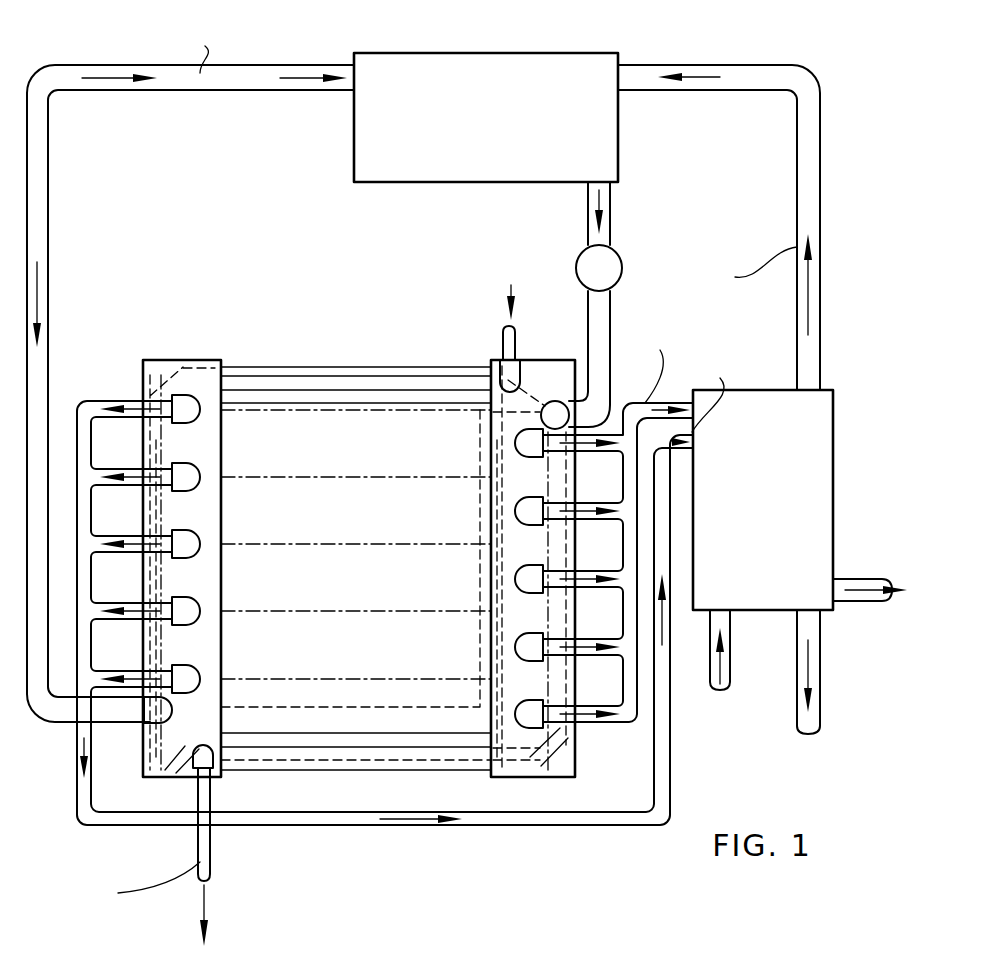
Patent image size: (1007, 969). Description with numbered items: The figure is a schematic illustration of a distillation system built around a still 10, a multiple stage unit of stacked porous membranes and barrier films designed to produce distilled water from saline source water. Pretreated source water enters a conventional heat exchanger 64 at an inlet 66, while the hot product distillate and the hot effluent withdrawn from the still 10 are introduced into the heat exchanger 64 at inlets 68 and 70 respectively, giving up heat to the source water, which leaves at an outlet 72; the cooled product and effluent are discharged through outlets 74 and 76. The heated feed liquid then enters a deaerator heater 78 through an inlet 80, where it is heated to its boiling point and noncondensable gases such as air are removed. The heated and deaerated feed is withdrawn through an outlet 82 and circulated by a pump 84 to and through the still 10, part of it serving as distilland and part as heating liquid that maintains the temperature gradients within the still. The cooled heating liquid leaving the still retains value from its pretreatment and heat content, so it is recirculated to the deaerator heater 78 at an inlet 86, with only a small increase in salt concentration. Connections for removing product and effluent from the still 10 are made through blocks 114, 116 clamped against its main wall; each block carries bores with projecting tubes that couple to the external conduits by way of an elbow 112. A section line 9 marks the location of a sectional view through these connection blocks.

The still 10 is at (335, 348).
The section line 9 is at (230, 323).
The heat exchanger 64 is at (818, 532).
The inlet 66 is at (728, 655).
The inlet 68 is at (688, 410).
The inlet 70 is at (692, 449).
The outlet 72 is at (808, 388).
The outlet 74 is at (856, 601).
The outlet 76 is at (805, 615).
The deaerator heater 78 is at (437, 174).
The inlet 80 is at (628, 81).
The outlet 82 is at (588, 190).
The pump 84 is at (585, 281).
The inlet 86 is at (341, 98).
The elbow 112 is at (557, 401).
The block 114 is at (505, 488).
The block 116 is at (150, 509).